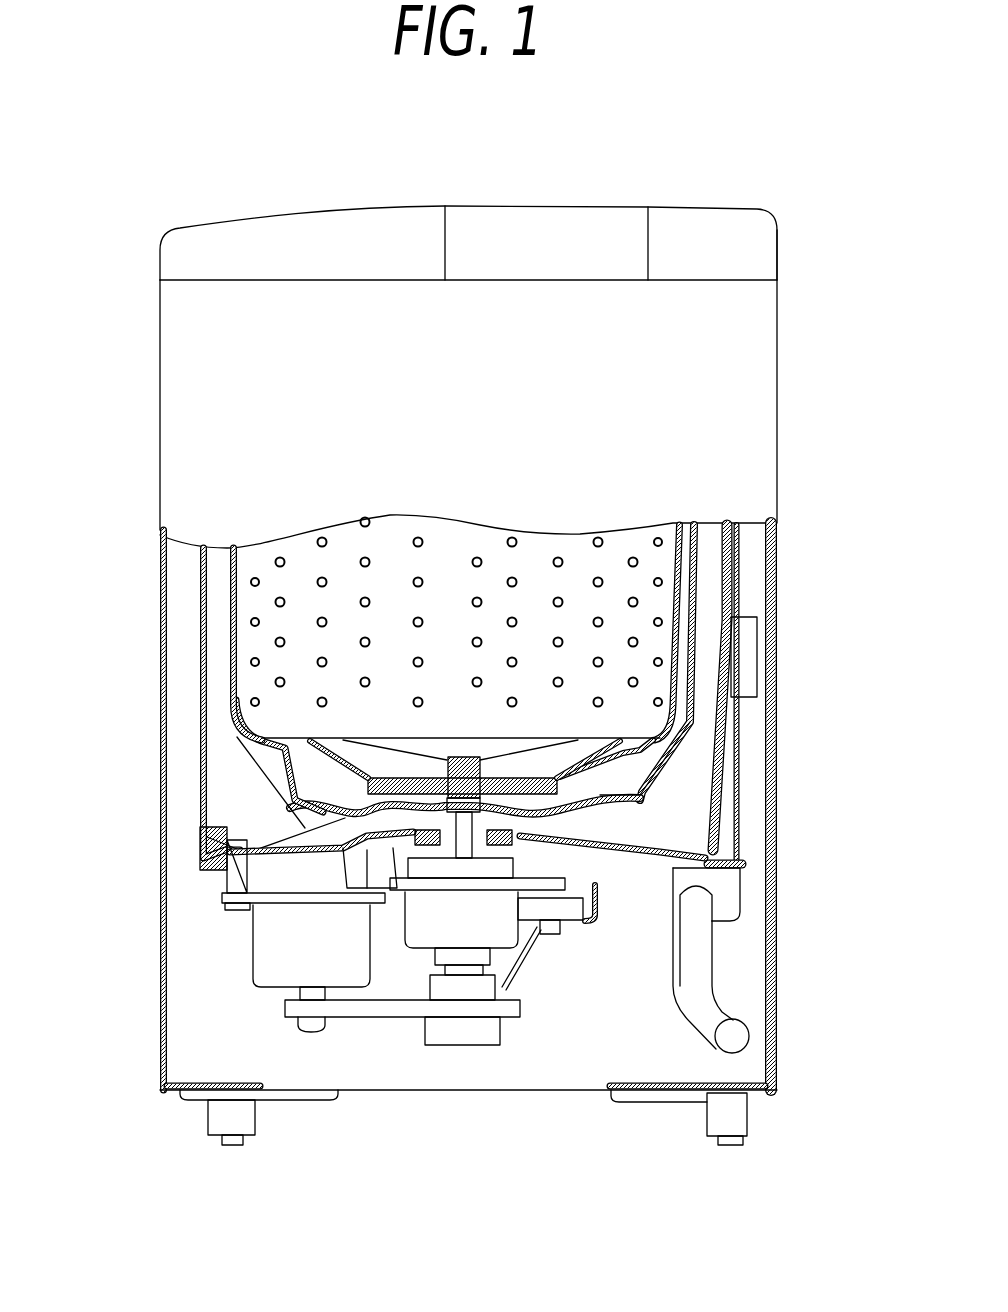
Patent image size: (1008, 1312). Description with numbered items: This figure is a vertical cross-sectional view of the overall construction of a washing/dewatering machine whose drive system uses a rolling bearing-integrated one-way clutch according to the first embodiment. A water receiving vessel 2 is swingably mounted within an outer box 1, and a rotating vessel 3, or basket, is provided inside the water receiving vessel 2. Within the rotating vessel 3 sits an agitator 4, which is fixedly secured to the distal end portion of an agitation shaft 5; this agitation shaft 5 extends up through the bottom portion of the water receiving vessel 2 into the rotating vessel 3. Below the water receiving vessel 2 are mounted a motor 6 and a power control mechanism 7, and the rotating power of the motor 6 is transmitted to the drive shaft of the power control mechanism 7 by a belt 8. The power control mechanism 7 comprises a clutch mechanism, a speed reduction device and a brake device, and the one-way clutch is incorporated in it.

The outer box 1 is at (775, 645).
The water receiving vessel 2 is at (200, 798).
The rotating vessel 3 is at (227, 645).
The agitator 4 is at (545, 762).
The agitation shaft 5 is at (247, 850).
The motor 6 is at (285, 963).
The power control mechanism 7 is at (553, 985).
The belt 8 is at (390, 1013).